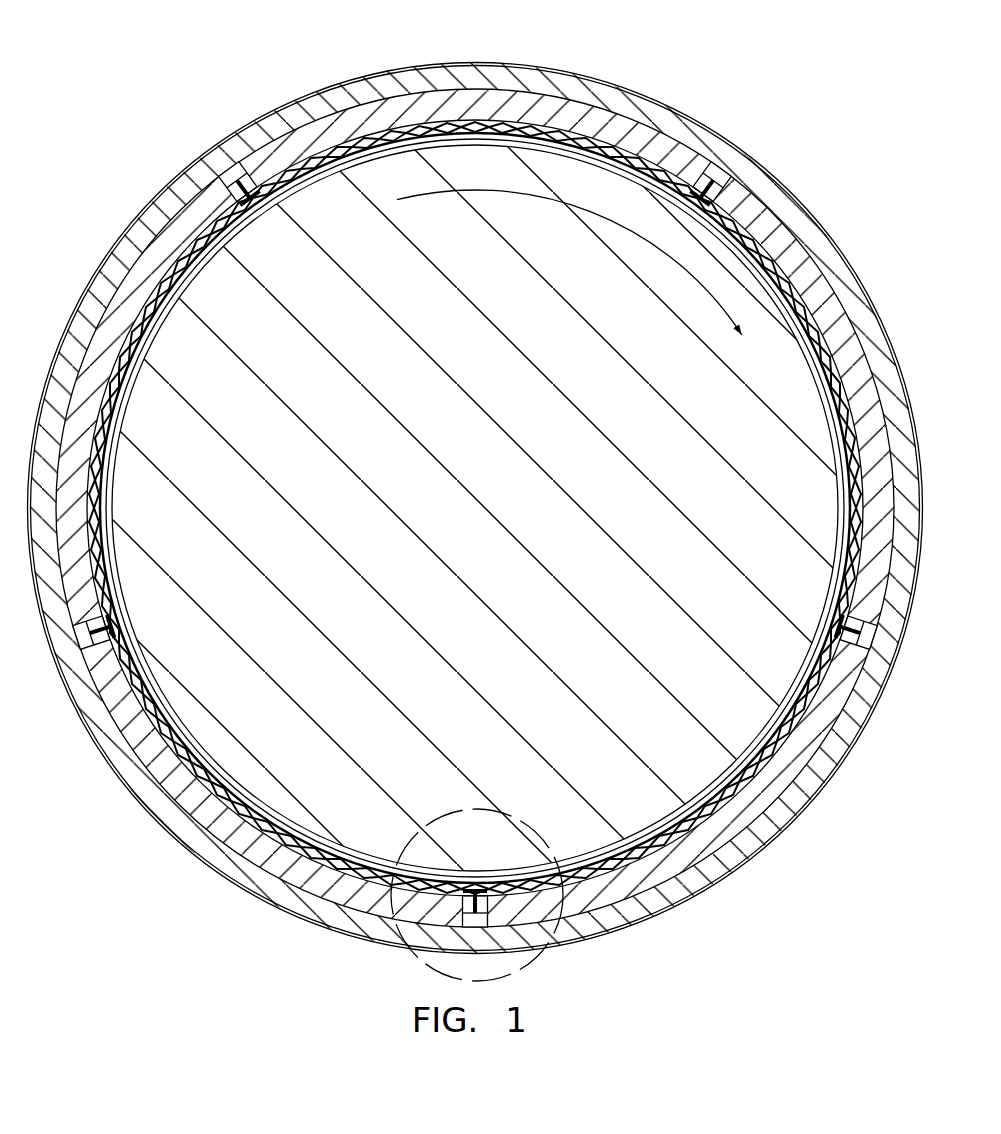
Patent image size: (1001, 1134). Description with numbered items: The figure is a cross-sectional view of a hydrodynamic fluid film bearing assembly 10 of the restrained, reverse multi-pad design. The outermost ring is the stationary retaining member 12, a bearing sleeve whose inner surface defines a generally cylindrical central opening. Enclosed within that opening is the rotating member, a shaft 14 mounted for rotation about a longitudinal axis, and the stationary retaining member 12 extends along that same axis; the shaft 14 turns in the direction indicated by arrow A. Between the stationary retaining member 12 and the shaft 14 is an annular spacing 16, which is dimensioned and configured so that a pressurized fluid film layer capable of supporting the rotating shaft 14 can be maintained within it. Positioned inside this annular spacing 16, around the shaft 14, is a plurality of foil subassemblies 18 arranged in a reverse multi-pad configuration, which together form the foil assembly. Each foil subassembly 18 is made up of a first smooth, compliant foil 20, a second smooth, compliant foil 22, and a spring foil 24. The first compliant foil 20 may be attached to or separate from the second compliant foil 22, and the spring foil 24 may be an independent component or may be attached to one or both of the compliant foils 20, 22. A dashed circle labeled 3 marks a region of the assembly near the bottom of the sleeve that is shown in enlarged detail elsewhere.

The hydrodynamic fluid film bearing assembly 10 is at (475, 492).
The stationary retaining member 12 is at (648, 130).
The shaft 14 is at (490, 163).
The annular spacing 16 is at (250, 214).
The foil subassembly 18 is at (377, 160).
The first compliant foil 20 is at (102, 630).
The second compliant foil 22 is at (128, 650).
The spring foil 24 is at (95, 511).
The detail region of FIG. 3 is at (416, 834).
The arrow A is at (546, 200).